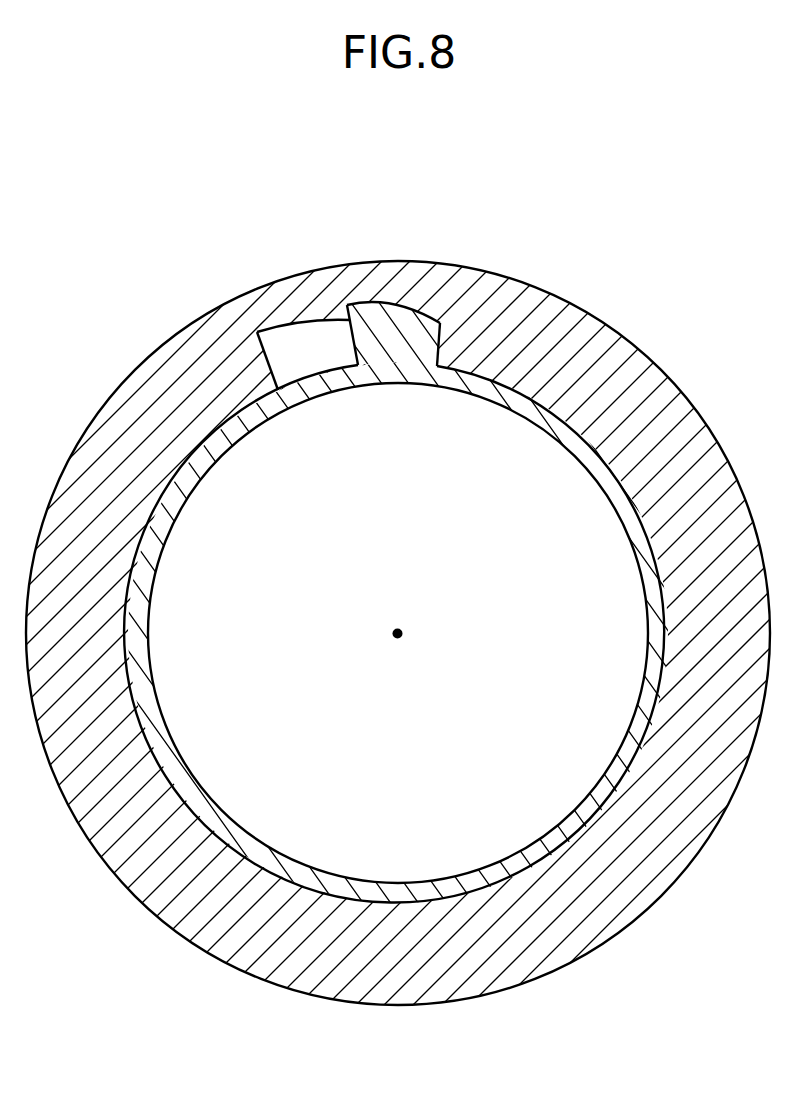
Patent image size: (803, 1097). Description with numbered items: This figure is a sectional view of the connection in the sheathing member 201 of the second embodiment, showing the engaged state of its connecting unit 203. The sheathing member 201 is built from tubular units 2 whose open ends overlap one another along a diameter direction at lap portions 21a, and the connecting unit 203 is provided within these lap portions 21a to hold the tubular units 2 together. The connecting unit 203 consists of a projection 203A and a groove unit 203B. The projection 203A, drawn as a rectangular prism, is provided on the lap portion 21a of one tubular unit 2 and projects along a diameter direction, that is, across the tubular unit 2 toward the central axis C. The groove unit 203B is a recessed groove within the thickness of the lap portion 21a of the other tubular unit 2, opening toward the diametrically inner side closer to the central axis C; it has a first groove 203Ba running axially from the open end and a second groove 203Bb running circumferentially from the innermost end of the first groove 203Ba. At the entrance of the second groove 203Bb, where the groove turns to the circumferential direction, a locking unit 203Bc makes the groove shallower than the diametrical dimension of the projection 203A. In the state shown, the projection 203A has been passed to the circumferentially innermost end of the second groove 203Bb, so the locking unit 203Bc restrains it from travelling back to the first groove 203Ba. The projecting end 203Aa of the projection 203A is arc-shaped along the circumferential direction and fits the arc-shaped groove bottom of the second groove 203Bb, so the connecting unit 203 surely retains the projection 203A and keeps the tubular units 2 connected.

The sheathing member 201 is at (675, 237).
The tubular unit 2 is at (516, 280).
The lap portion 21a is at (576, 307).
The connecting unit 203 is at (347, 251).
The projection 203A is at (406, 250).
The projecting end 203Aa is at (377, 305).
The groove unit 203B is at (347, 281).
The first groove 203Ba is at (272, 357).
The second groove 203Bb is at (445, 336).
The locking unit 203Bc is at (340, 340).
The central axis C is at (397, 639).